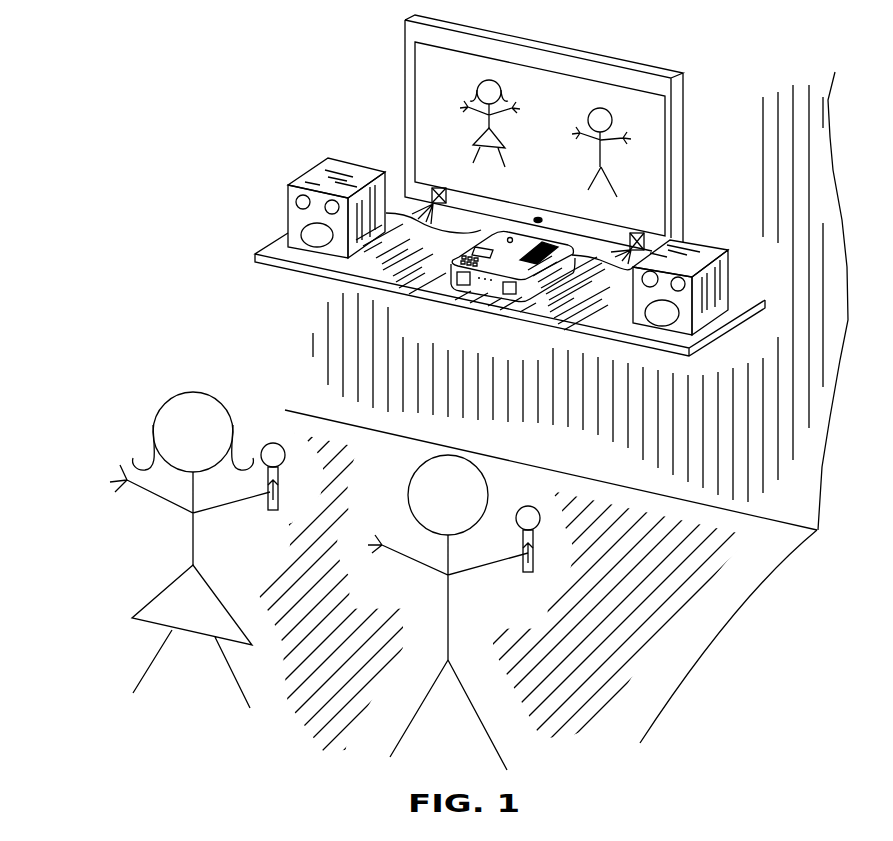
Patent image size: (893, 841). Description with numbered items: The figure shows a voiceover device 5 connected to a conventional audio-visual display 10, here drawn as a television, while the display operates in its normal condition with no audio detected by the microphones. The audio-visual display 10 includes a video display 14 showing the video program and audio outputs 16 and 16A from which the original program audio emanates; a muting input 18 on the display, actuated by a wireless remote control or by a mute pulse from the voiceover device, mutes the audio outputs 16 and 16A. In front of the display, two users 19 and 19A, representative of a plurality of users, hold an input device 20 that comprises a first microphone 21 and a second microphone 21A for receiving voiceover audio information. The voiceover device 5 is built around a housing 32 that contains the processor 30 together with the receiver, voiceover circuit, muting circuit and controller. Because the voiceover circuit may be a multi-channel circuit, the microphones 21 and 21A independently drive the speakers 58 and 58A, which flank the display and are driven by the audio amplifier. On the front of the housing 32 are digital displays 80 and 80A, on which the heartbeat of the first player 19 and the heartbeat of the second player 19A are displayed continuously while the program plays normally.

The voiceover device 5 is at (240, 130).
The audio-visual display 10 is at (410, 64).
The video display 14 is at (440, 97).
The audio output 16 is at (433, 192).
The audio output 16A is at (641, 233).
The muting input 18 is at (541, 219).
The user 19 is at (193, 545).
The user 19A is at (448, 590).
The input device 20 is at (130, 421).
The first microphone 21 is at (268, 510).
The second microphone 21A is at (523, 577).
The processor 30 is at (450, 273).
The housing 32 is at (485, 288).
The speaker 58 is at (315, 222).
The speaker 58A is at (698, 250).
The digital display 80 is at (462, 285).
The digital display 80A is at (513, 295).